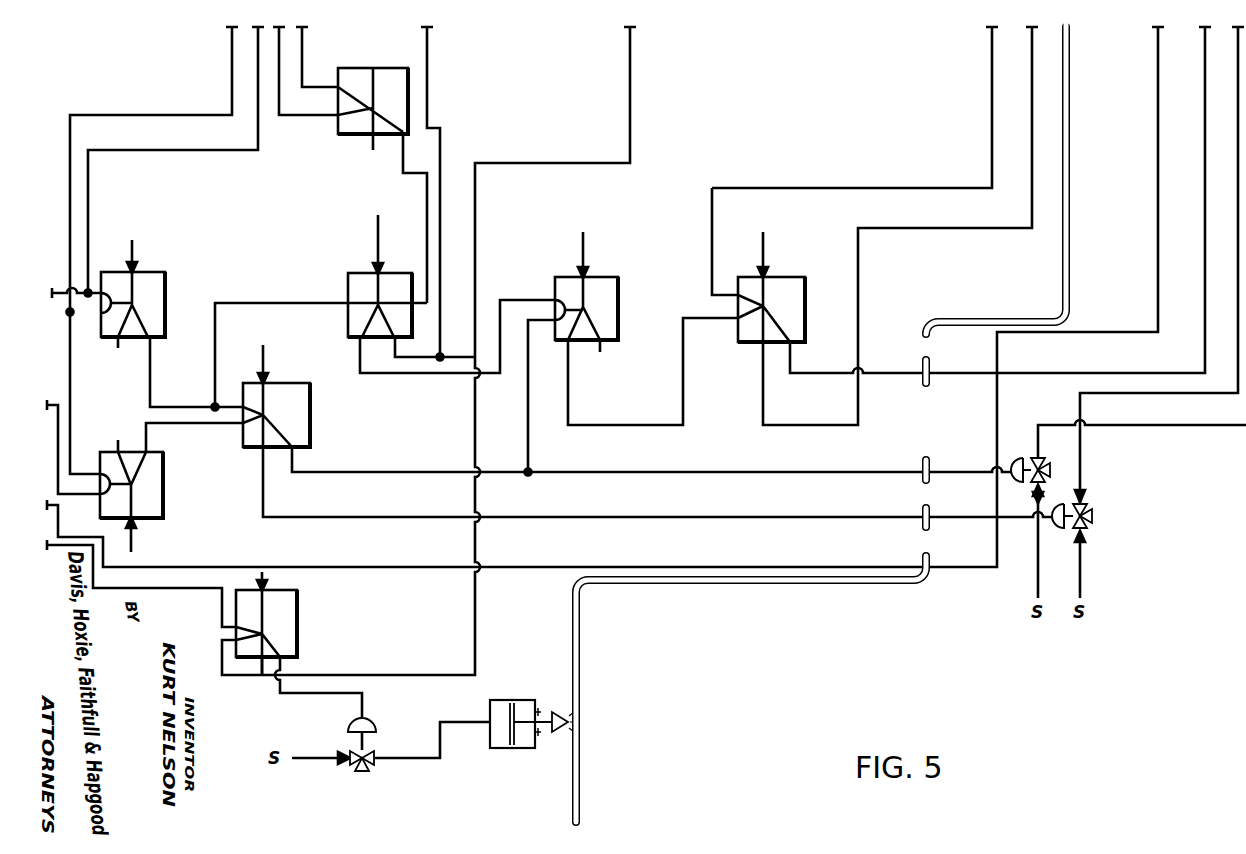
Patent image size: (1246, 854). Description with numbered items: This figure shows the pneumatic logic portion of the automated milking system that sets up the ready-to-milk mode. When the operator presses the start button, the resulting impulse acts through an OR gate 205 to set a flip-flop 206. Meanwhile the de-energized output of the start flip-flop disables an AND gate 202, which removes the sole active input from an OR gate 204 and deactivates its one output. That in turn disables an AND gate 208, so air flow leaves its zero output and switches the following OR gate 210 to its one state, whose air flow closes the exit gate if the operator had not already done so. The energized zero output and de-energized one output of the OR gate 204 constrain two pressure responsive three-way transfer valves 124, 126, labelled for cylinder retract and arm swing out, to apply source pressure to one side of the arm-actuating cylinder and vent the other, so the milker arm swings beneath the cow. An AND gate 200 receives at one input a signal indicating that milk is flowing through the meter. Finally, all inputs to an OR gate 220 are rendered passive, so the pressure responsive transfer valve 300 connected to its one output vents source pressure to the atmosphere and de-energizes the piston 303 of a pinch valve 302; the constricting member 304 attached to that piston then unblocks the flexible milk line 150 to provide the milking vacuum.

The OR gate 205 is at (393, 62).
The AND gate 200 is at (181, 289).
The flip-flop 206 is at (385, 270).
The AND gate 208 is at (630, 294).
The OR gate 210 is at (817, 320).
The OR gate 204 is at (322, 430).
The AND gate 202 is at (165, 470).
The OR gate 220 is at (310, 652).
The pressure responsive three-way transfer valve 126 is at (1028, 462).
The pressure responsive three-way transfer valve 124 is at (1094, 515).
The pressure responsive transfer valve 300 is at (378, 724).
The pinch valve 302 is at (533, 685).
The piston 303 is at (507, 735).
The constricting member 304 is at (556, 708).
The flexible milk line 150 is at (582, 794).